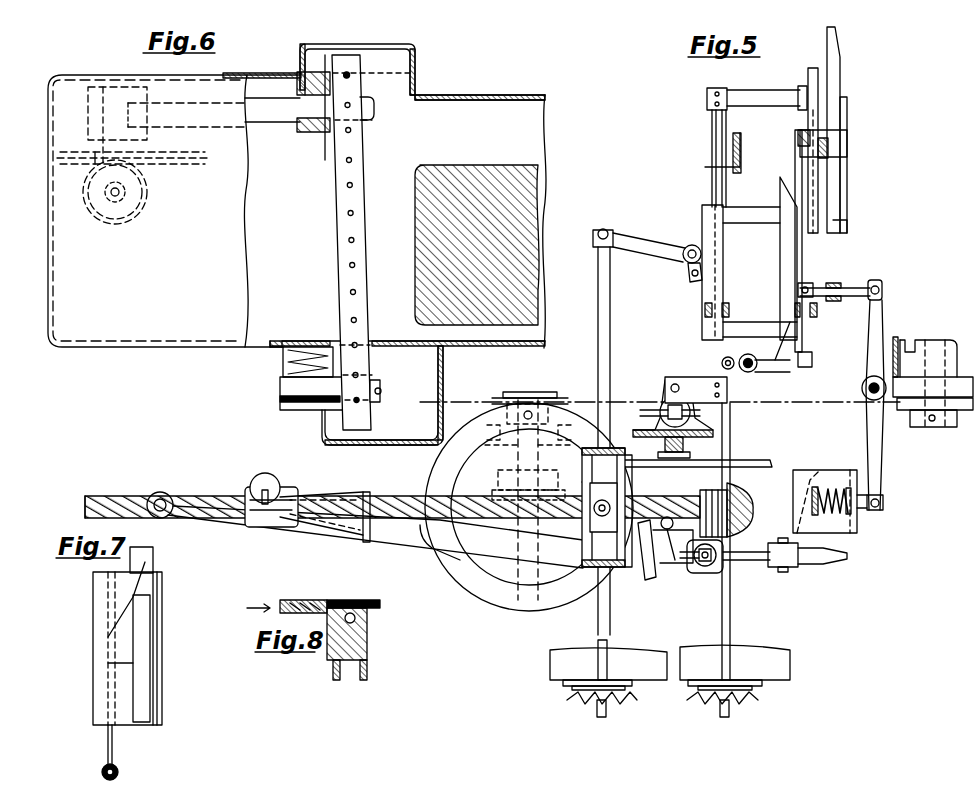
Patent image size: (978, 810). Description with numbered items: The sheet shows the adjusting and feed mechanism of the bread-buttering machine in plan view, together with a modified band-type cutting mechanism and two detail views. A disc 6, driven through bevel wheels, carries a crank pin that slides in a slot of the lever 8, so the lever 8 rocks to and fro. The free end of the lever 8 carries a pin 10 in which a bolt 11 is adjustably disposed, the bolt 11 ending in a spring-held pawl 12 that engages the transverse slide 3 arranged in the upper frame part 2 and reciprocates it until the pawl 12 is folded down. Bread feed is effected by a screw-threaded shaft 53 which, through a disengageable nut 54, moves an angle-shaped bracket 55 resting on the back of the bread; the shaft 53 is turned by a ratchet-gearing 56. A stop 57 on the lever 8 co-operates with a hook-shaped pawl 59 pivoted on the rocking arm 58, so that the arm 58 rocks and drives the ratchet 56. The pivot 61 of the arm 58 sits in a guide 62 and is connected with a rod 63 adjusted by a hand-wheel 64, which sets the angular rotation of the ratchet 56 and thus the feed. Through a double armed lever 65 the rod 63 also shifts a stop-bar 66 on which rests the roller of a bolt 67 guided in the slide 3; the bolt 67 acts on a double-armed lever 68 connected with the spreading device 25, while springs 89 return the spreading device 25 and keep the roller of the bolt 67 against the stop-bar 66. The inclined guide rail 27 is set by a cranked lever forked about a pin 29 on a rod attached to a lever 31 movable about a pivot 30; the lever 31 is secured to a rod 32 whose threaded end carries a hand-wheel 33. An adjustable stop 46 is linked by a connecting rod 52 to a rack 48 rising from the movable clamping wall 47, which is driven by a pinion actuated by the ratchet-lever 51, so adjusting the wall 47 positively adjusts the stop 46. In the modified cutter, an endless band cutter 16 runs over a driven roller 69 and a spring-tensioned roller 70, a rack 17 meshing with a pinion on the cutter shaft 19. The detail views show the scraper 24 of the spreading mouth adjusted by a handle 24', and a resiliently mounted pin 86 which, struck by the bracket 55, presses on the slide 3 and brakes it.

In FIG. 8, the upper part of the frame 2 is at (368, 652).
In FIG. 6, the transverse slide 3 is at (297, 244).
In FIG. 5, the transverse slide 3 is at (806, 497).
In FIG. 8, the transverse slide 3 is at (381, 606).
In FIG. 5, the disc 6 is at (496, 605).
In FIG. 5, the lever 8 is at (393, 543).
In FIG. 5, the pin 10 is at (703, 568).
In FIG. 5, the bolt 11 is at (762, 560).
In FIG. 5, the pawl 12 is at (830, 553).
In FIG. 6, the band cutter 16 is at (341, 247).
In FIG. 6, the rack 17 is at (183, 160).
In FIG. 6, the shaft of the cutter disc 19 is at (122, 193).
In FIG. 7, the scraper 24 is at (142, 636).
In FIG. 7, the handle 24' is at (128, 754).
In FIG. 5, the spreading device 25 is at (855, 530).
In FIG. 7, the spreading device 25 is at (150, 680).
In FIG. 5, the guide rail 27 is at (842, 186).
In FIG. 5, the pin 29 is at (848, 144).
In FIG. 5, the pivot 30 is at (748, 372).
In FIG. 5, the lever 31 is at (763, 368).
In FIG. 5, the rod 32 is at (731, 620).
In FIG. 5, the hand-wheel 33 is at (760, 700).
In FIG. 5, the adjustable stop 46 is at (838, 82).
In FIG. 5, the movable wall 47 is at (760, 468).
In FIG. 5, the rack 48 is at (684, 447).
In FIG. 5, the ratchet-lever 51 is at (668, 400).
In FIG. 5, the connecting rod 52 is at (724, 252).
In FIG. 5, the screw-threaded shaft 53 is at (386, 500).
In FIG. 5, the disengageable nut 54 is at (288, 525).
In FIG. 5, the angle-shaped bracket 55 is at (358, 532).
In FIG. 5, the ratchet-gearing 56 is at (700, 500).
In FIG. 5, the stop 57 is at (634, 565).
In FIG. 5, the rocking arm 58 is at (675, 545).
In FIG. 5, the hook-shaped pawl 59 is at (650, 578).
In FIG. 5, the pivot 61 is at (598, 500).
In FIG. 5, the guide 62 is at (595, 466).
In FIG. 5, the rod 63 is at (611, 342).
In FIG. 5, the hand-wheel 64 is at (572, 698).
In FIG. 5, the double armed lever 65 is at (660, 250).
In FIG. 5, the stop-bar 66 is at (780, 286).
In FIG. 5, the bolt 67 is at (826, 296).
In FIG. 5, the double-armed lever 68 is at (868, 426).
In FIG. 6, the driving roller 69 is at (357, 63).
In FIG. 6, the tensioning roller 70 is at (366, 415).
In FIG. 8, the pin 86 is at (316, 585).
In FIG. 5, the springs 89 is at (822, 495).